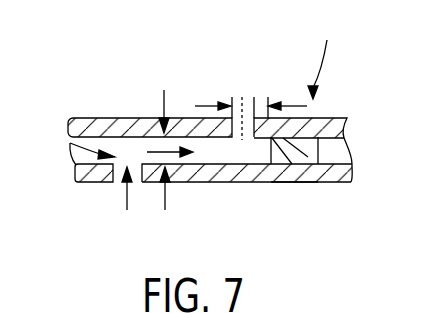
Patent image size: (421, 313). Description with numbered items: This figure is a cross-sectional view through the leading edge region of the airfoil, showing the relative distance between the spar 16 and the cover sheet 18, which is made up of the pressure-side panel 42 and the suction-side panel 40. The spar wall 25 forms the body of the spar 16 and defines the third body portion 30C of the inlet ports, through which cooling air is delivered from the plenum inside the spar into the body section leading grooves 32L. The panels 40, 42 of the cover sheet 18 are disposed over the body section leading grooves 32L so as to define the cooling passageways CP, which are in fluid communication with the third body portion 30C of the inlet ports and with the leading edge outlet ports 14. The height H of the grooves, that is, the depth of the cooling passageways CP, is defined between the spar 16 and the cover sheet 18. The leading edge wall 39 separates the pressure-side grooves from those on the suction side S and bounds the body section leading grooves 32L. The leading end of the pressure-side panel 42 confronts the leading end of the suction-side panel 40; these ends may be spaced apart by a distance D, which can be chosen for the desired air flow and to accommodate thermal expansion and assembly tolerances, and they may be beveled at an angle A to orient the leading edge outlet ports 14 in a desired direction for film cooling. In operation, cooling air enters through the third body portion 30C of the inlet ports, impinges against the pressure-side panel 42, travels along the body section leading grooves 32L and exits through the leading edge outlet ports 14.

The pressure-side panel 42 is at (118, 128).
The suction-side panel 40 is at (327, 127).
The leading edge outlet ports 14 is at (245, 133).
The suction side S is at (205, 106).
The distance D is at (243, 97).
The cover sheet 18 is at (323, 56).
The body section leading grooves 32L is at (70, 143).
The third body portion of the inlet ports 30C is at (124, 165).
The height of the grooves H is at (165, 208).
The spar 16 is at (178, 178).
The angle A is at (233, 150).
The cooling passageways CP is at (240, 160).
The leading edge wall 39 is at (312, 168).
The spar wall 25 is at (278, 178).